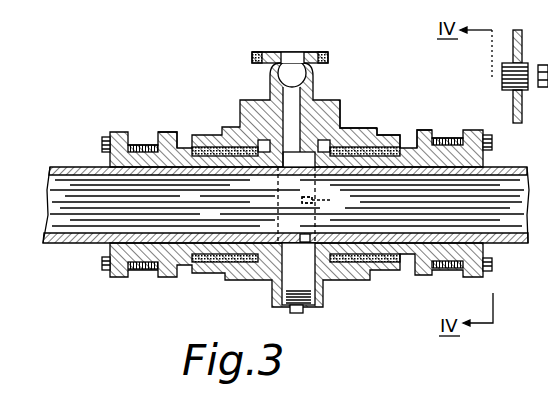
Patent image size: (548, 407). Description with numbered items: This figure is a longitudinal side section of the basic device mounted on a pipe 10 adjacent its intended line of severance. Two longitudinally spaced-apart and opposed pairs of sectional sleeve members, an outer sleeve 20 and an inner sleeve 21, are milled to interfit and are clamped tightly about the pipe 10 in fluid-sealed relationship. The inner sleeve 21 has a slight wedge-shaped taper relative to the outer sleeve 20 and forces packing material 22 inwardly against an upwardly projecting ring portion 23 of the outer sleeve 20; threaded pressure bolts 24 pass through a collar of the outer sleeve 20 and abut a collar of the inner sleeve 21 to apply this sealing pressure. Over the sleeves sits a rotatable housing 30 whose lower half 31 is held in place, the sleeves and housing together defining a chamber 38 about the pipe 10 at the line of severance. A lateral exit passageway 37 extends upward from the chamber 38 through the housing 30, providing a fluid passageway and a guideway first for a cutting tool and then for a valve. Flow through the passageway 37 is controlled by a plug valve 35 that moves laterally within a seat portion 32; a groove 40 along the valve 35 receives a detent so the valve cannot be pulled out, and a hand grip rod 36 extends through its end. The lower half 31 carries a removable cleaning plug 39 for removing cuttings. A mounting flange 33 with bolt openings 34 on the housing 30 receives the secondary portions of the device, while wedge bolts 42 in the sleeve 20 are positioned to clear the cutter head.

The pipe 10 is at (68, 167).
The outer sleeve 20 is at (118, 126).
The inner sleeve 21 is at (171, 133).
The packing material 22 is at (387, 132).
The ring portion 23 is at (347, 126).
The pressure bolts 24 is at (140, 140).
The rotatable housing 30 is at (224, 126).
The lower half of rotatable housing 31 is at (219, 278).
The seat portion 32 is at (280, 73).
The flange or mounting face 33 is at (309, 52).
The bolt openings 34 is at (261, 52).
The plug valve 35 is at (525, 93).
The hand grip rod 36 is at (519, 44).
The passageway 37 is at (293, 104).
The chamber 38 is at (280, 292).
The cleaning plug 39 is at (304, 310).
The groove 40 is at (543, 61).
The wedge bolts 42 is at (330, 200).